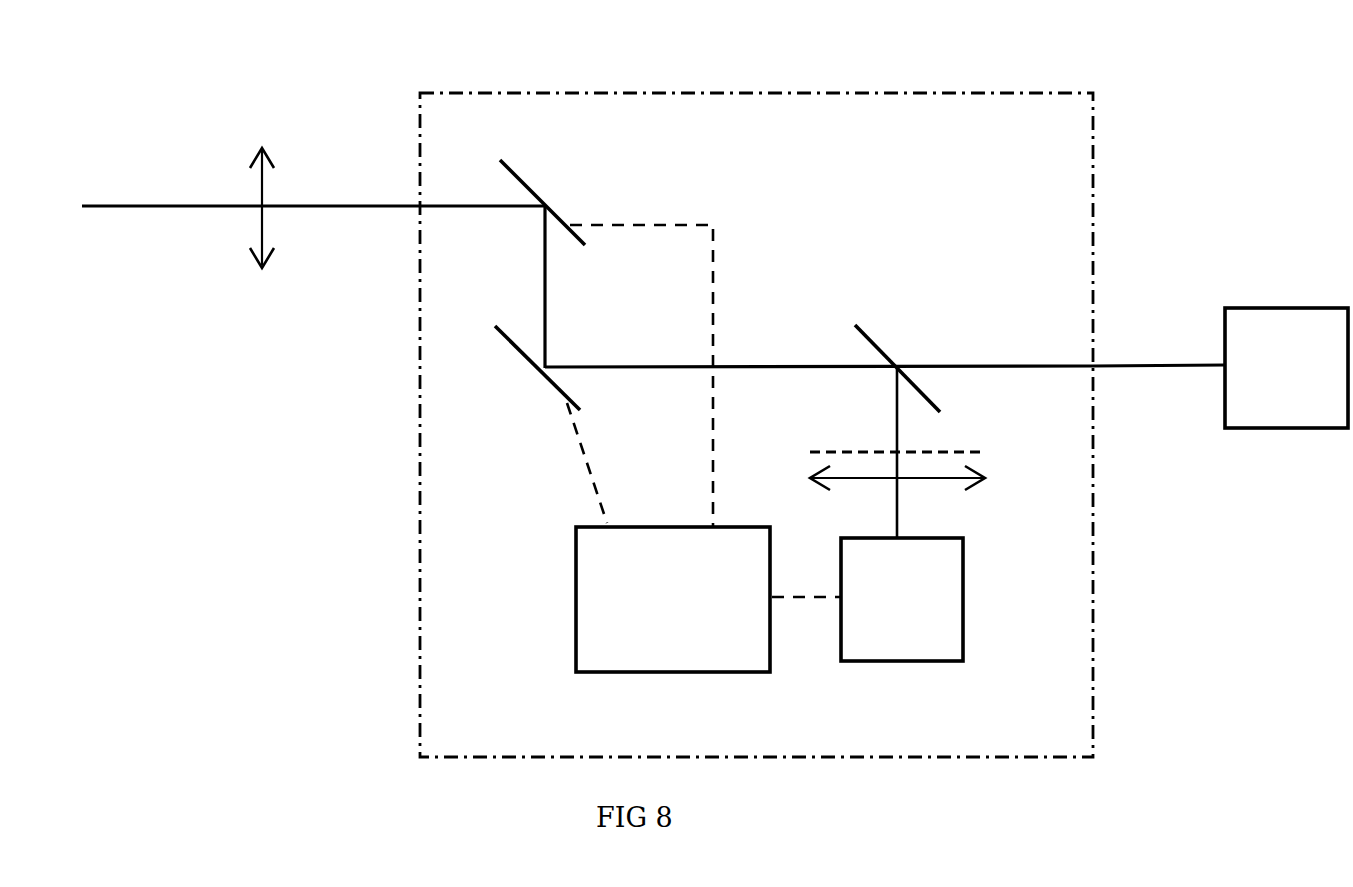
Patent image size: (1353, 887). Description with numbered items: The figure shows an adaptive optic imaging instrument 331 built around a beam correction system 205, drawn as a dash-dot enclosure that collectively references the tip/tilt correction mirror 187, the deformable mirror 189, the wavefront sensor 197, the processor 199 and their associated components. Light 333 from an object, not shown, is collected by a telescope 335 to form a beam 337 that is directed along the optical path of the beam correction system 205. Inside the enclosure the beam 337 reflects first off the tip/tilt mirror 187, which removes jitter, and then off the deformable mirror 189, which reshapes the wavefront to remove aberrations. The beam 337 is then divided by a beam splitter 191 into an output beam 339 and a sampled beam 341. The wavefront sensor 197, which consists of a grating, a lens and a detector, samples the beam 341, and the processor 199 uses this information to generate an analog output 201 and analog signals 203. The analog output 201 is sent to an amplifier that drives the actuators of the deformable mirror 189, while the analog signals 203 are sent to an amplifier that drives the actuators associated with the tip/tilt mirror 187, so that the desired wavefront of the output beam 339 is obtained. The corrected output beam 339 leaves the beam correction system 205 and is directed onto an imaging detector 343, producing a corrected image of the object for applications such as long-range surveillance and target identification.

The tip/tilt correction mirror 187 is at (528, 183).
The deformable mirror 189 is at (550, 387).
The beam splitter 191 is at (865, 333).
The wavefront sensor 197 is at (996, 633).
The processor 199 is at (590, 615).
The analog output 201 is at (587, 465).
The analog signals 203 is at (717, 250).
The beam correction system 205 is at (820, 92).
The imaging instrument 331 is at (318, 570).
The light 333 is at (128, 213).
The telescope 335 is at (258, 185).
The beam 337 is at (336, 210).
The output beam 339 is at (997, 368).
The beam 341 is at (895, 405).
The imaging detector 343 is at (1288, 413).